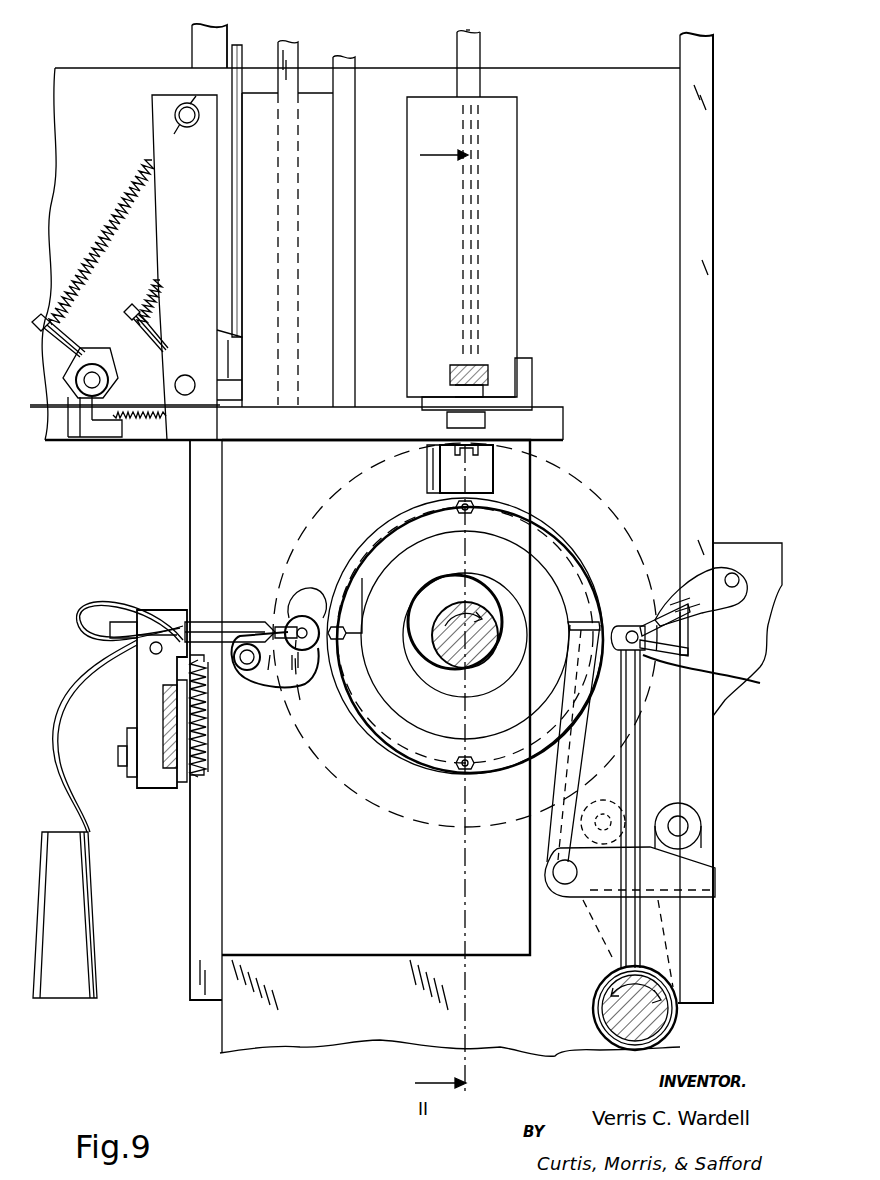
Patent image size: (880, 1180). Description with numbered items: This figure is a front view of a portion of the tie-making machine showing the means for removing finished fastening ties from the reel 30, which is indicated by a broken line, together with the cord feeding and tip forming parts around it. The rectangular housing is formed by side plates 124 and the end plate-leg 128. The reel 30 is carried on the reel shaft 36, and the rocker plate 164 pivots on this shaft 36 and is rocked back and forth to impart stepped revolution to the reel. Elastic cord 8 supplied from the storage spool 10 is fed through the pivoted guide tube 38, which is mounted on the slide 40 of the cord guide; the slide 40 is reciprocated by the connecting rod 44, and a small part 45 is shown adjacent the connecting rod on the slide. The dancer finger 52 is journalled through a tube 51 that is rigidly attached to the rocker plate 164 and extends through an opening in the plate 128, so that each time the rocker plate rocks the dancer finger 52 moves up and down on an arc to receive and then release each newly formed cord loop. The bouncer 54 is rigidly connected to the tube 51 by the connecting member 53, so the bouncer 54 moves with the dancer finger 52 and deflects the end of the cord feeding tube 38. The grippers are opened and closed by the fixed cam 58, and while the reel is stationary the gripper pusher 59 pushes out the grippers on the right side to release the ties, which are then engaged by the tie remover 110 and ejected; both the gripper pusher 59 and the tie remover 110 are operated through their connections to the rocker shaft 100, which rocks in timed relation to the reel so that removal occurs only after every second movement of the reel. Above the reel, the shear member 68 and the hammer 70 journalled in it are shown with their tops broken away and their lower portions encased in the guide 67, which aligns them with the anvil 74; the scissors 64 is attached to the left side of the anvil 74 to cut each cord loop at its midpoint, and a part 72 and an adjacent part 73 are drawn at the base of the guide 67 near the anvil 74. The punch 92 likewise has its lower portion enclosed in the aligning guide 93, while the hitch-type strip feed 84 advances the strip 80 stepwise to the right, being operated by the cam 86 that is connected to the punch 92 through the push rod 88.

The elastic cord 8 is at (58, 763).
The storage spool 10 is at (65, 915).
The reel 30 is at (380, 800).
The reel shaft 36 is at (490, 622).
The guide tube 38 is at (240, 622).
The slide 40 is at (148, 699).
The connecting rod 44 is at (130, 729).
The stop 45 is at (118, 752).
The tube 51 is at (306, 598).
The dancer finger 52 is at (292, 596).
The connecting member 53 is at (280, 690).
The bouncer 54 is at (246, 670).
The fixed cam 58 is at (465, 768).
The gripper pusher 59 is at (578, 625).
The scissors 64 is at (427, 481).
The guide 67 is at (462, 247).
The shear member 68 is at (482, 60).
The hammer 70 is at (472, 33).
The key 72 is at (447, 422).
The base plate 73 is at (525, 390).
The anvil 74 is at (484, 474).
The strip 80 is at (38, 400).
The strip feed 84 is at (112, 331).
The cam 86 is at (240, 363).
The push rod 88 is at (242, 272).
The punch 92 is at (300, 50).
The aligning guide 93 is at (298, 231).
The rocker shaft 100 is at (660, 1008).
The tie remover 110 is at (626, 590).
The side plates 124 is at (195, 510).
The end plate-leg 128 is at (634, 84).
The rocker plate 164 is at (304, 724).